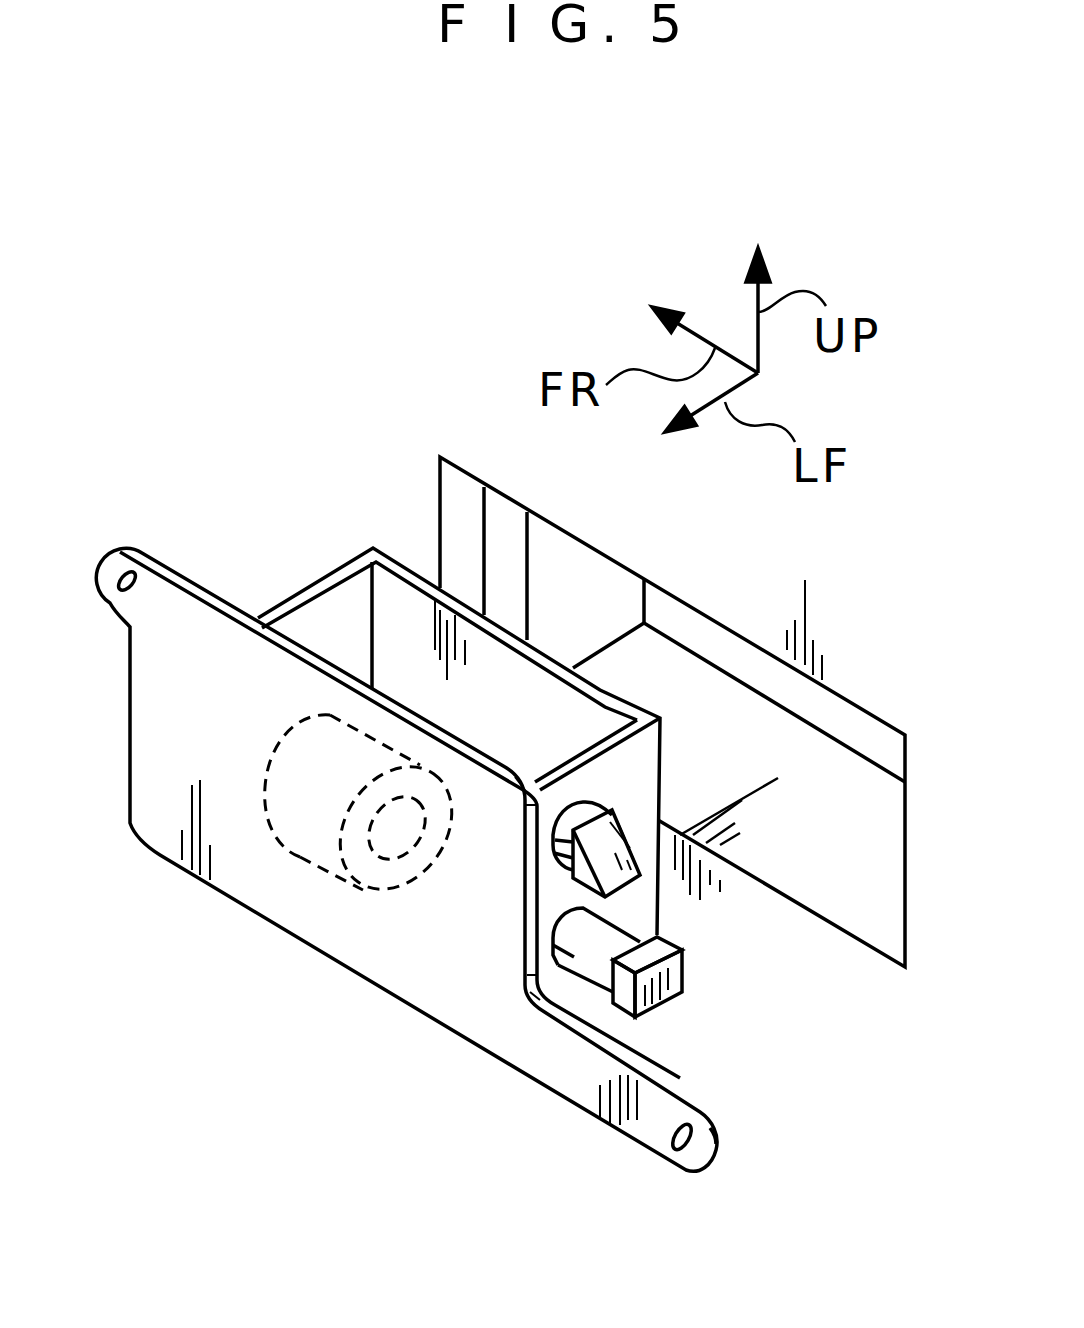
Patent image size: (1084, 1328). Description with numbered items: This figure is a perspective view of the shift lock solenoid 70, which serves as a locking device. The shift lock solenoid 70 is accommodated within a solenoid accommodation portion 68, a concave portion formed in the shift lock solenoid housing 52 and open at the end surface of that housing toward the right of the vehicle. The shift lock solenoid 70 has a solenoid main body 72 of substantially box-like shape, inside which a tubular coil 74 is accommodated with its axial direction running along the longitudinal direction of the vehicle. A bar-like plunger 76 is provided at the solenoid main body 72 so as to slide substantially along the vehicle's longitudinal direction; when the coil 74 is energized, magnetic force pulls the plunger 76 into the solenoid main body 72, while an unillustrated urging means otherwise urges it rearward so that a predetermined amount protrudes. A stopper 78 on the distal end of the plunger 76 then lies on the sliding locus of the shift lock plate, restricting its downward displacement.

The shift lock solenoid housing 52 is at (776, 950).
The solenoid accommodation portion 68 is at (832, 897).
The shift lock solenoid 70 is at (387, 1021).
The solenoid main body 72 is at (555, 887).
The coil 74 is at (333, 862).
The plunger 76 is at (580, 960).
The stopper 78 is at (677, 992).